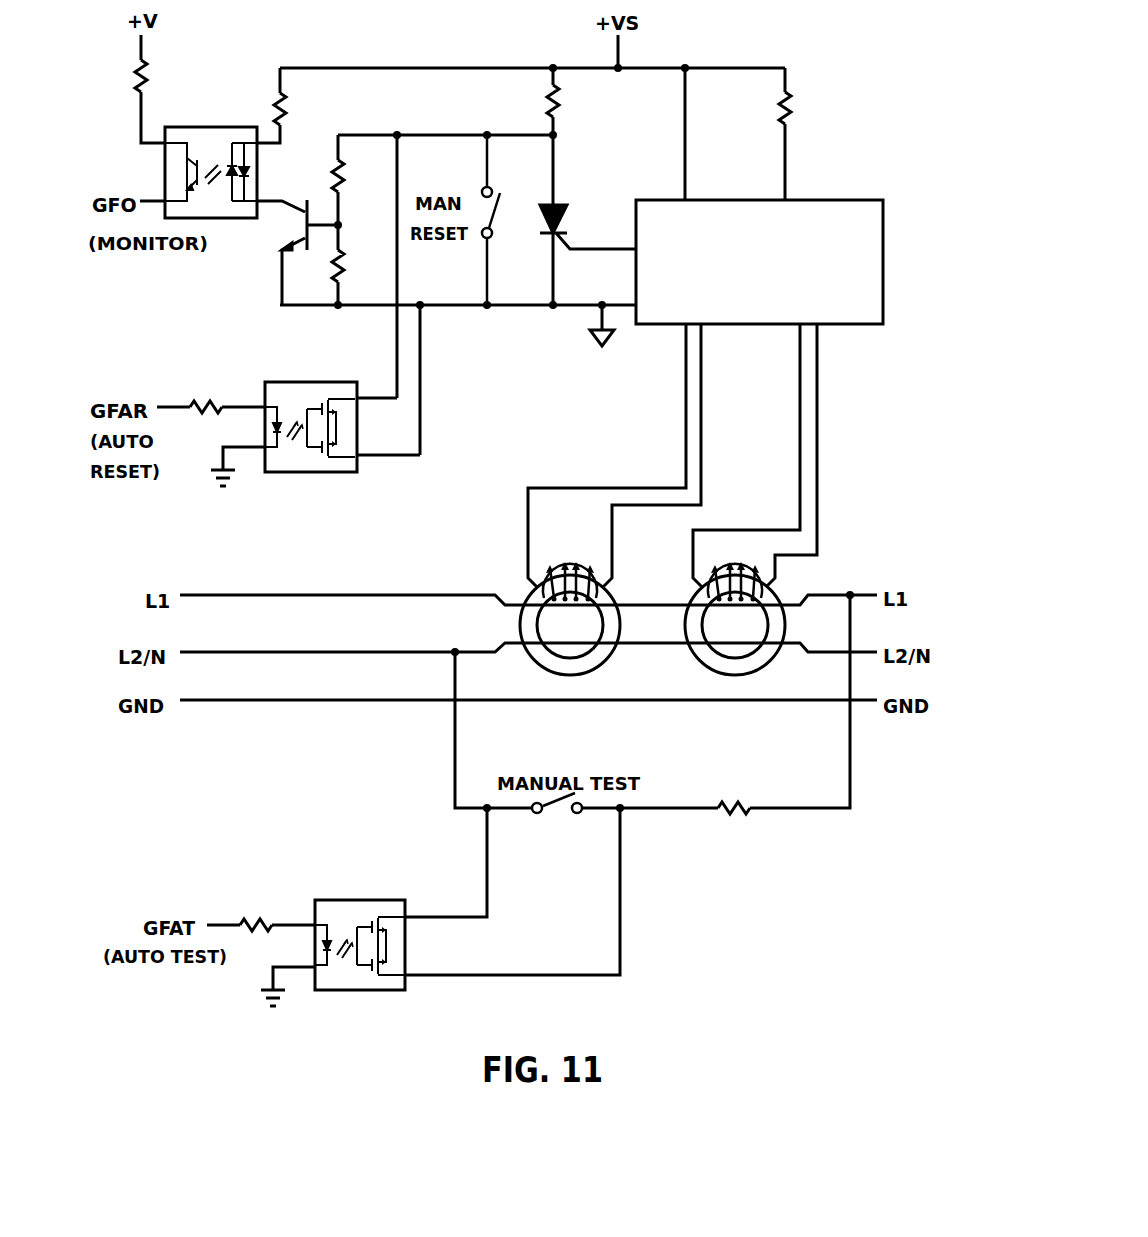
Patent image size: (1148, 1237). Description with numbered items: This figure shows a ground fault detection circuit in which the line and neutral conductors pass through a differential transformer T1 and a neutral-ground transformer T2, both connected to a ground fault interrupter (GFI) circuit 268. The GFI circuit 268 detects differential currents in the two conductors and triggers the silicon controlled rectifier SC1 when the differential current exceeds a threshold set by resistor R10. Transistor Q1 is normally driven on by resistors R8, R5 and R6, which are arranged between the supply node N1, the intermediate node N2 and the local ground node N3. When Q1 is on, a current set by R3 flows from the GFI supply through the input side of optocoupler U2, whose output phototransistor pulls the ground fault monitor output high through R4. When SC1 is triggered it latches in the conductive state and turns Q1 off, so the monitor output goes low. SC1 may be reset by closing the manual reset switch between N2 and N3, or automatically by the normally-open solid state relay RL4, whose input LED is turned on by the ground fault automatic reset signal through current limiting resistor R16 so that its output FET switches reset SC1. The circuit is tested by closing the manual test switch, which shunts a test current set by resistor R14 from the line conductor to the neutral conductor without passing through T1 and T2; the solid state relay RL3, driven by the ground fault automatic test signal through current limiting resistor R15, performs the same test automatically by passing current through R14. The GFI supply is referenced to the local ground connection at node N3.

The ground fault interrupter (GFI) circuit 268 is at (850, 198).
The resistor R4 is at (131, 89).
The optocoupler U2 is at (211, 160).
The resistor R3 is at (290, 105).
The transistor Q1 is at (297, 252).
The resistor R5 is at (356, 180).
The resistor R6 is at (356, 265).
The resistor R8 is at (571, 101).
The silicon controlled rectifier (SCR) SC1 is at (588, 220).
The resistor R10 is at (763, 134).
The node N1 is at (553, 66).
The node N2 is at (487, 133).
The node N3 is at (487, 304).
The differential transformer T1 is at (610, 499).
The neutral-ground (N-G) transformer T2 is at (751, 499).
The resistor R14 is at (735, 796).
The current limiting resistor R15 is at (261, 912).
The current limiting resistor R16 is at (211, 395).
The solid state relay RL3 is at (360, 932).
The solid state relay RL4 is at (311, 414).